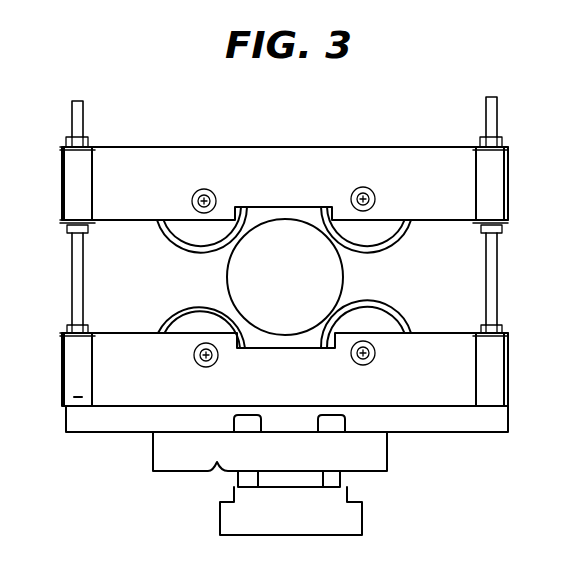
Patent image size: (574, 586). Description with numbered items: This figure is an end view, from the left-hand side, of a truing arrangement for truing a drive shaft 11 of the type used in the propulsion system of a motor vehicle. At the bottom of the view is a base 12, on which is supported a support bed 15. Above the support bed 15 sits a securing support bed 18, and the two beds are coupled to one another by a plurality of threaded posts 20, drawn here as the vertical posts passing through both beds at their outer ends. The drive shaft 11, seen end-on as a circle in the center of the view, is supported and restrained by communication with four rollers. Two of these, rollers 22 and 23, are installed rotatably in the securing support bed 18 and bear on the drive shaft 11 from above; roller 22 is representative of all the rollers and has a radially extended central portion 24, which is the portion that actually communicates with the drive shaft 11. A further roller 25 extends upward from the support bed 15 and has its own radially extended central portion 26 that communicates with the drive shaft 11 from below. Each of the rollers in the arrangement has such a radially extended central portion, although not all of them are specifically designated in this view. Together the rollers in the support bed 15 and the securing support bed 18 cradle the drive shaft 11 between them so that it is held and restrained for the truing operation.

The drive shaft 11 is at (240, 273).
The base 12 is at (378, 448).
The support bed 15 is at (106, 373).
The securing support bed 18 is at (281, 158).
The threaded post 20 is at (78, 283).
The roller 22 is at (386, 240).
The roller 23 is at (186, 241).
The radially extended central portion 24 is at (404, 220).
The roller 25 is at (398, 327).
The radially extended central portion 26 is at (385, 299).